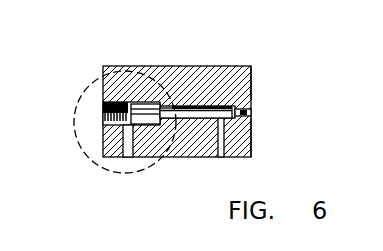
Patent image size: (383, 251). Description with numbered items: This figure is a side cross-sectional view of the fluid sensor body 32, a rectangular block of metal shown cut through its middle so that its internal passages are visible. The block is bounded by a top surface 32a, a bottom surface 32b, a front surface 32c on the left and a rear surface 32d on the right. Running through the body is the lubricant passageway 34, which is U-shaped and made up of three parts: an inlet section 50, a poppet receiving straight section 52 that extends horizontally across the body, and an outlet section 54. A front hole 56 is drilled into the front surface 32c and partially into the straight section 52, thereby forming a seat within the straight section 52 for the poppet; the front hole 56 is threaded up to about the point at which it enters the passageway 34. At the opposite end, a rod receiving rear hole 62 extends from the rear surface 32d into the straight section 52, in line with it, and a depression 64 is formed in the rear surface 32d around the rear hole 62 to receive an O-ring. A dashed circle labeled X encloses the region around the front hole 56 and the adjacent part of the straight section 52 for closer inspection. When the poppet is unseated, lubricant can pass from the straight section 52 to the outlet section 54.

The fluid sensor body 32 is at (88, 59).
The top surface 32a is at (169, 106).
The bottom surface 32b is at (192, 119).
The front surface 32c is at (103, 128).
The rear surface 32d is at (252, 129).
The lubricant passageway 34 is at (194, 106).
The inlet section 50 is at (221, 118).
The poppet receiving straight section 52 is at (222, 106).
The outlet section 54 is at (129, 125).
The front hole 56 is at (103, 110).
The rod receiving rear hole 62 is at (252, 82).
The depression 64 is at (251, 110).
The detail circle X is at (93, 168).